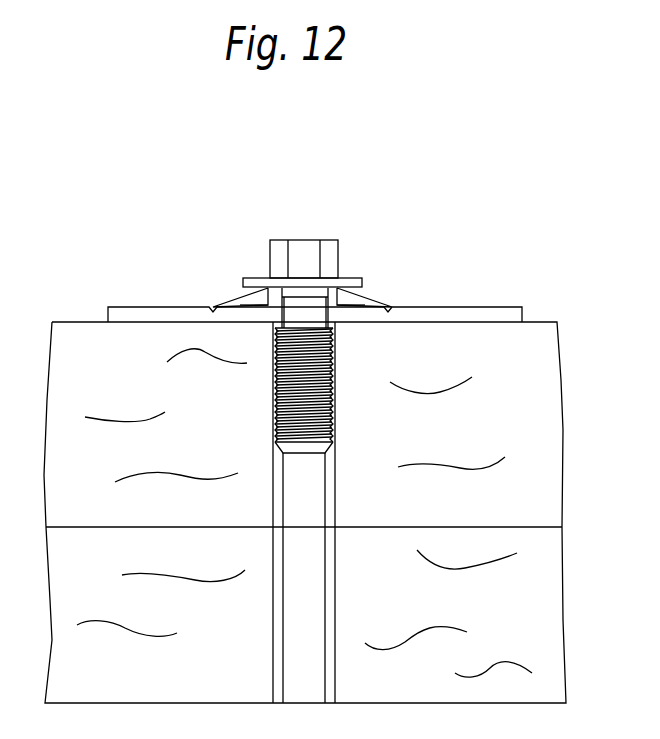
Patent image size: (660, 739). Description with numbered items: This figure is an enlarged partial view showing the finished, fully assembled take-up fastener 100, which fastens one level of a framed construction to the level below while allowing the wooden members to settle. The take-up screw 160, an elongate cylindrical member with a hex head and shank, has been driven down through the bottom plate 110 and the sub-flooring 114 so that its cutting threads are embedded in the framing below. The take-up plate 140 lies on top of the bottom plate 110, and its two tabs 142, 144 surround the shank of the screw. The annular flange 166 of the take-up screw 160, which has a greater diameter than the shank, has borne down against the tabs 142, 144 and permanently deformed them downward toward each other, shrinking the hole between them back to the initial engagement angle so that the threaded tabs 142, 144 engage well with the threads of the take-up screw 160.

The take-up fastener 100 is at (226, 211).
The bottom plate 110 is at (563, 432).
The sub-flooring 114 is at (558, 590).
The take-up plate 140 is at (115, 307).
The tab 142 is at (245, 299).
The tab 144 is at (356, 296).
The take-up screw 160 is at (302, 240).
The annular flange 166 is at (347, 278).